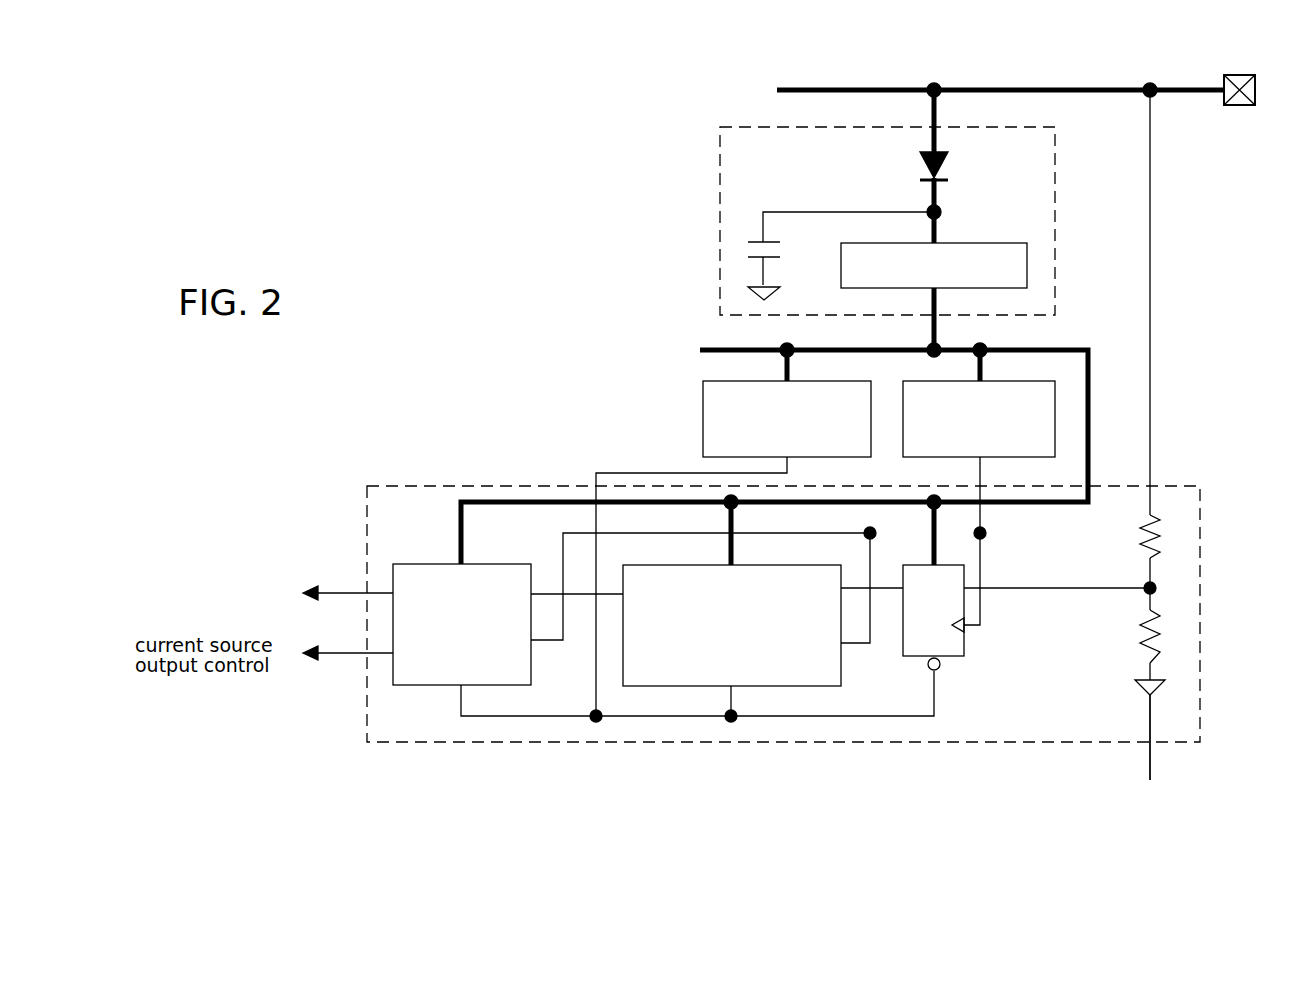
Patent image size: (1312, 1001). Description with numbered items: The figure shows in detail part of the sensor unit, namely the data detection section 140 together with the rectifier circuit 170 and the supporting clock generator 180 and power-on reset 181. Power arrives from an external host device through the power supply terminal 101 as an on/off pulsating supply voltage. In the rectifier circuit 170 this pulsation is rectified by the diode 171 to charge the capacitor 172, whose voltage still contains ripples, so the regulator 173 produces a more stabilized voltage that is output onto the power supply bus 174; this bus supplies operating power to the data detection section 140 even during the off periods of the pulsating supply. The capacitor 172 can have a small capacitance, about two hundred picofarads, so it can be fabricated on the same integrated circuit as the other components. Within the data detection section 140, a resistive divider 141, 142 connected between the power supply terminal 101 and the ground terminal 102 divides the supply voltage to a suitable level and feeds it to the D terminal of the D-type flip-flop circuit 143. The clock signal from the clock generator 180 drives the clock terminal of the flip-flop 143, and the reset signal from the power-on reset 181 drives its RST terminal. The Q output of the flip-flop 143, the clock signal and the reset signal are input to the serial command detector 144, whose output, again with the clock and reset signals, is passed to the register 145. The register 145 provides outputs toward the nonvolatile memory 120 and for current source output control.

The power supply terminal 101 is at (1236, 75).
The ground terminal 102 is at (1151, 745).
The nonvolatile memory 120 is at (243, 585).
The data detection section 140 is at (1200, 486).
The resistive divider 141 is at (1163, 542).
The resistive divider 142 is at (1163, 640).
The D-type flip-flop circuit 143 is at (960, 656).
The serial command detector 144 is at (790, 673).
The register 145 is at (510, 660).
The rectifier circuit 170 is at (720, 127).
The diode 171 is at (952, 173).
The capacitor 172 is at (748, 250).
The regulator 173 is at (1000, 268).
The power supply bus 174 is at (1091, 349).
The clock generator 180 is at (1045, 408).
The power-on reset 181 is at (703, 400).